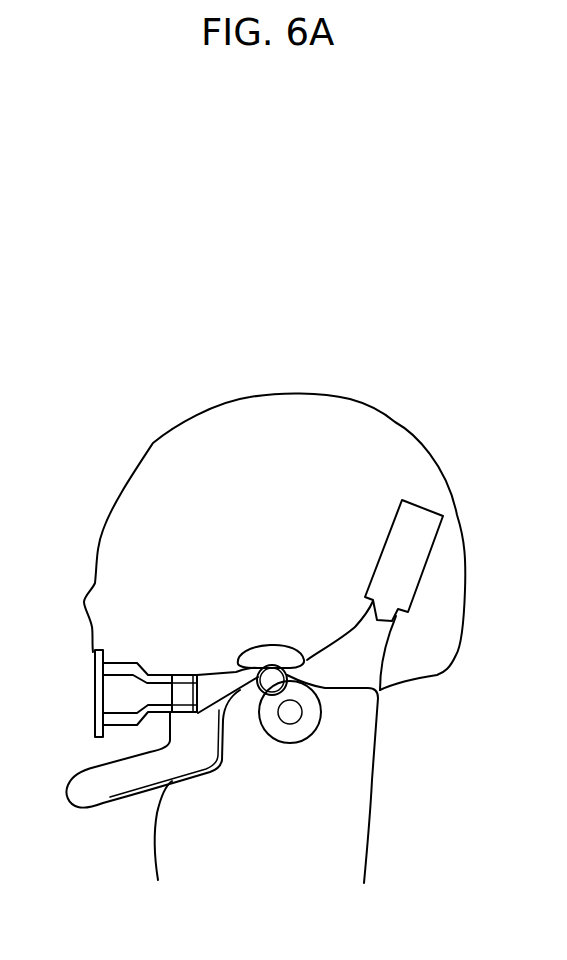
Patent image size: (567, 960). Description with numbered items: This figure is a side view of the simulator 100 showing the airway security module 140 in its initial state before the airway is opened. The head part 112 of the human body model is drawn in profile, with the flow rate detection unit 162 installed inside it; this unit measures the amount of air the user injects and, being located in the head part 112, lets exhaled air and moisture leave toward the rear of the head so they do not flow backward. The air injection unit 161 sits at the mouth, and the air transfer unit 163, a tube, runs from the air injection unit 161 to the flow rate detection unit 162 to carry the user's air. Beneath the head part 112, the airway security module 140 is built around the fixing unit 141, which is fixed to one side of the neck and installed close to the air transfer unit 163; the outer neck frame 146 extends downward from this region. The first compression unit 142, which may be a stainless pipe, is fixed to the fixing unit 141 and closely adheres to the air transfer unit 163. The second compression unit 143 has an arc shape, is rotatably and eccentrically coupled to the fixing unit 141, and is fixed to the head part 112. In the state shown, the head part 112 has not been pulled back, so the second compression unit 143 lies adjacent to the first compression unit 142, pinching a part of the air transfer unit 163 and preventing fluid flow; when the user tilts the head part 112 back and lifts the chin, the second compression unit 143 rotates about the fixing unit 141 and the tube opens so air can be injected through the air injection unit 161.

The head mounted device 100 is at (84, 356).
The head part 112 is at (390, 420).
The flow rate detection unit 162 is at (422, 545).
The air transfer unit 163 is at (383, 635).
The air injection unit 161 is at (93, 692).
The airway security module 140 is at (378, 764).
The second compression unit 143 is at (295, 658).
The first compression unit 142 is at (272, 680).
The fixing unit 141 is at (318, 722).
The outer neck frame 146 is at (367, 827).